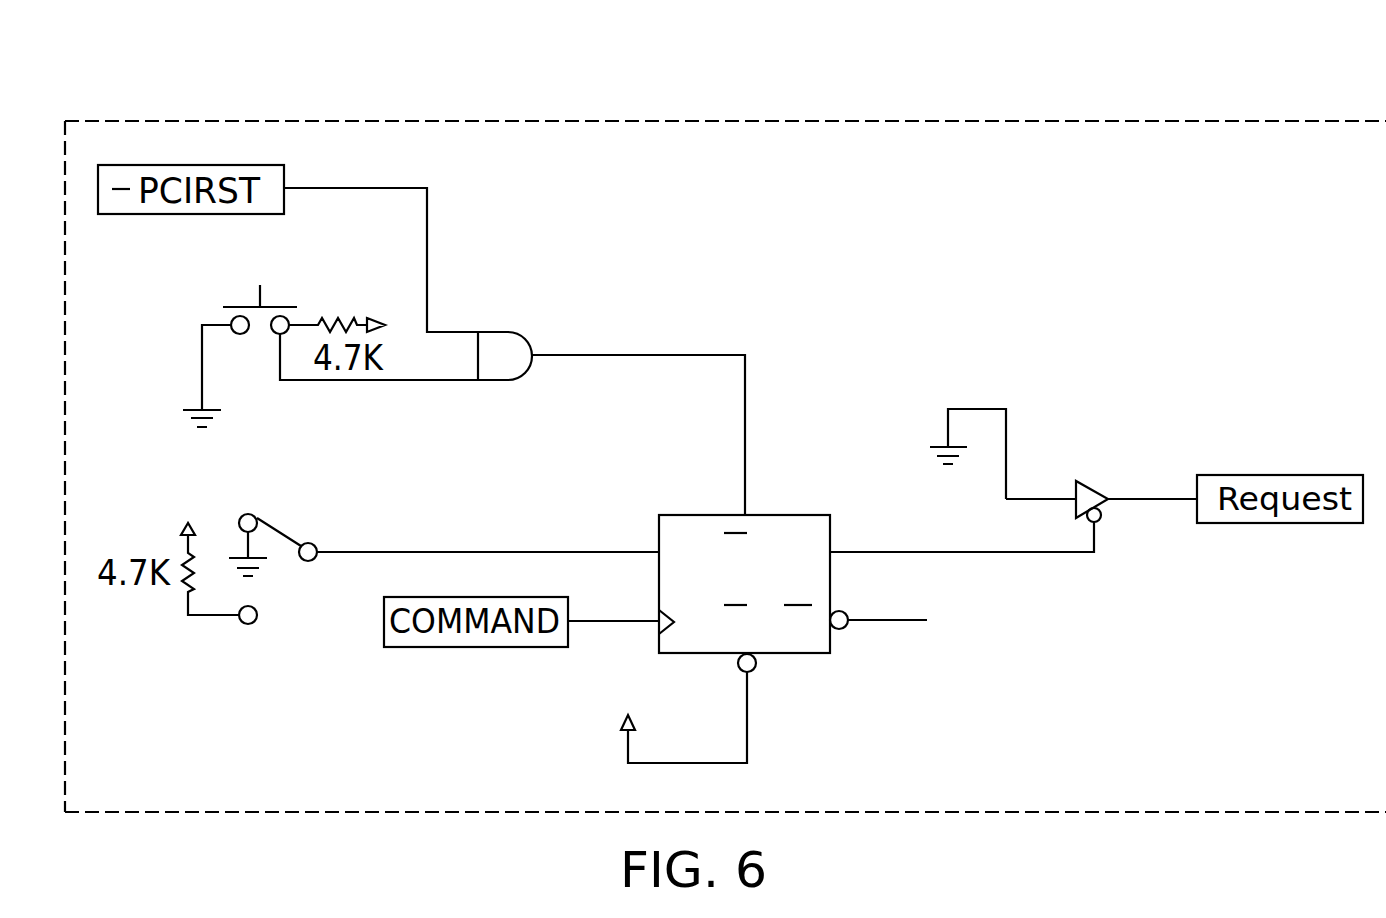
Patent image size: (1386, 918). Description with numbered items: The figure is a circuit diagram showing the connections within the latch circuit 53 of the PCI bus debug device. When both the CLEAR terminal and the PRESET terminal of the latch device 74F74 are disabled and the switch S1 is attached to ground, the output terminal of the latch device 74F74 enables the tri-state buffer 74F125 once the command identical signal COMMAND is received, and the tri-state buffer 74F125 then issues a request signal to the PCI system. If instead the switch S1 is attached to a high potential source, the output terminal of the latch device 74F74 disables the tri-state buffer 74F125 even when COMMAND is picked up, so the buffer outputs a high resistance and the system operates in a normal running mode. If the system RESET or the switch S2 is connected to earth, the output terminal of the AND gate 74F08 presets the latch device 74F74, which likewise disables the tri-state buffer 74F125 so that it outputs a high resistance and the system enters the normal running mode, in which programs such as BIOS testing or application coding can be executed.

The latch circuit 53 is at (935, 121).
The switch S1 is at (273, 523).
The switch S2 is at (260, 284).
The AND gate 74F08 is at (533, 379).
The latch device 74F74 is at (793, 609).
The tri-state buffer 74F125 is at (1110, 537).